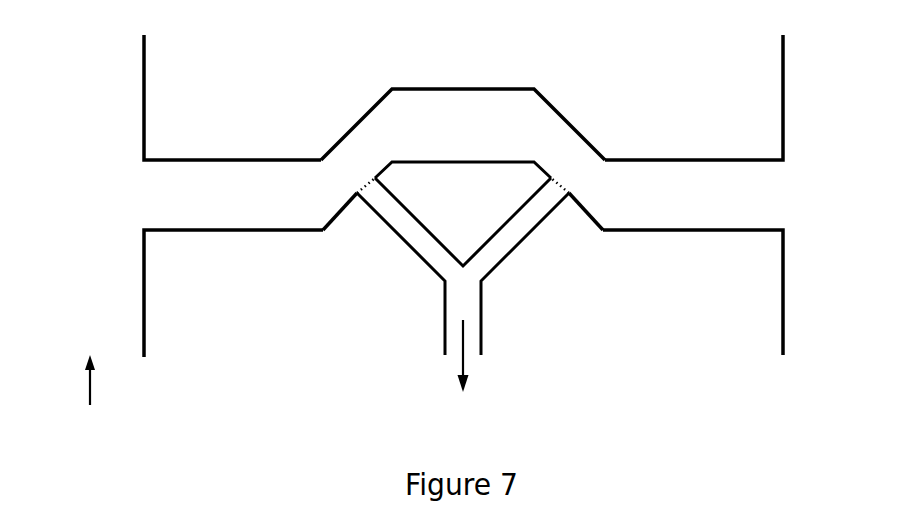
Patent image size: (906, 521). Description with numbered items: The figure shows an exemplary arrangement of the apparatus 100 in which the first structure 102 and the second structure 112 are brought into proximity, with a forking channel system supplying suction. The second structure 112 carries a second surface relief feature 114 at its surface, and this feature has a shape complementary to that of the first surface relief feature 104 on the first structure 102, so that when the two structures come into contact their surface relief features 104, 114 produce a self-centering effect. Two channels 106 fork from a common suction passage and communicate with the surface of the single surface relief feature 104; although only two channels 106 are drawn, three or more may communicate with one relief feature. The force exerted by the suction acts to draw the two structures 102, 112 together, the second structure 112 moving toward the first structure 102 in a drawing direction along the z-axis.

The apparatus 100 is at (118, 86).
The first structure 102 is at (143, 250).
The second structure 112 is at (143, 120).
The second surface relief feature 114 is at (562, 114).
The first surface relief feature 104 is at (584, 208).
The channels 106 is at (501, 228).